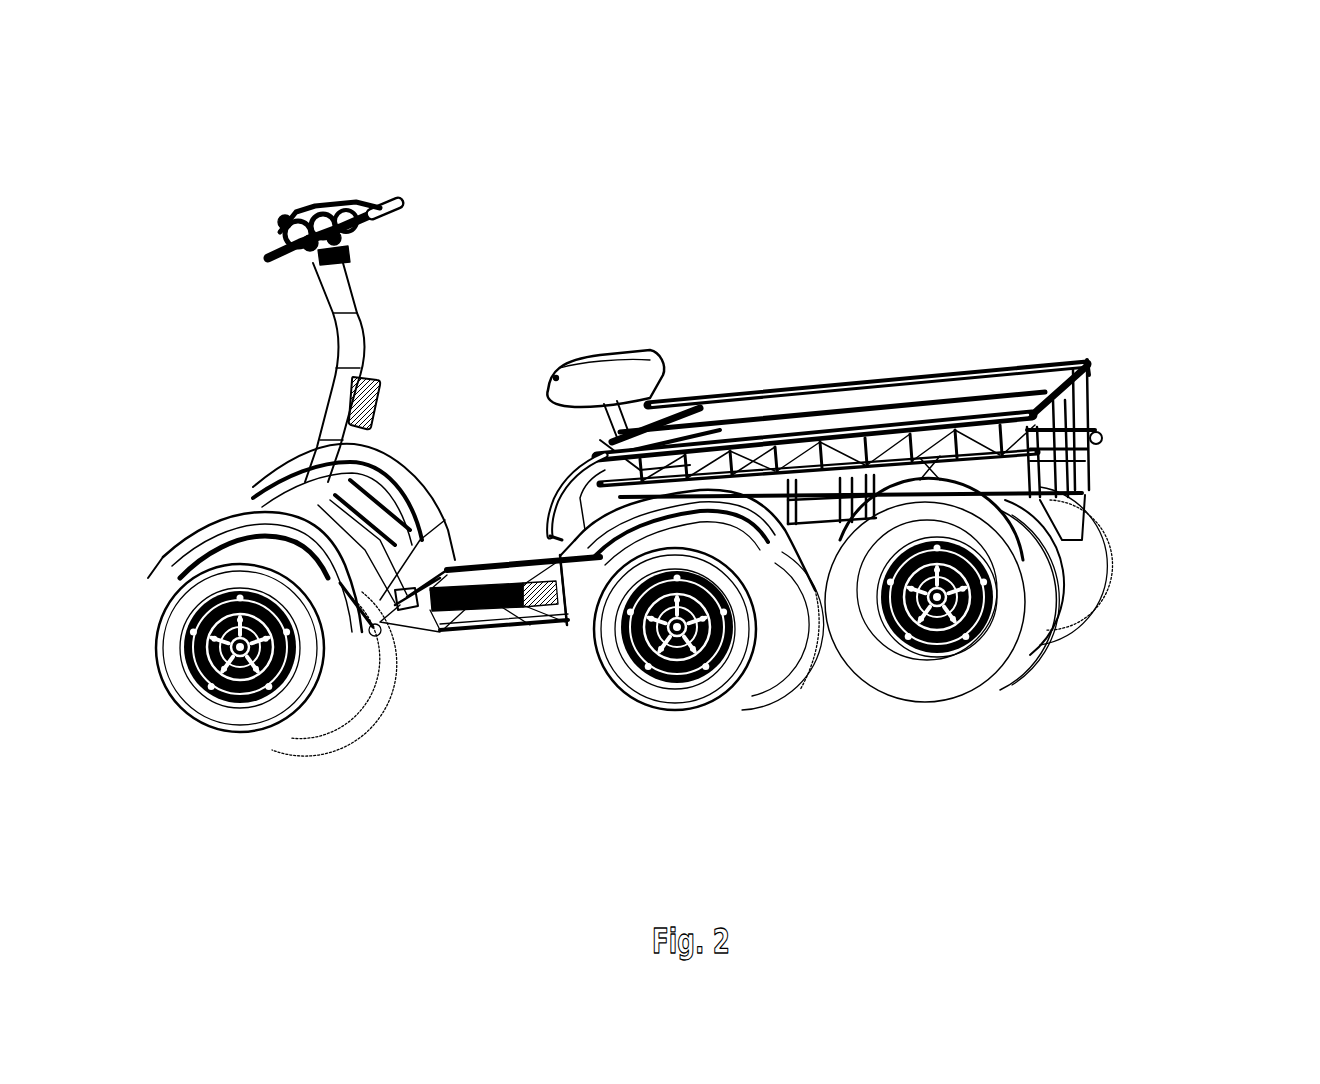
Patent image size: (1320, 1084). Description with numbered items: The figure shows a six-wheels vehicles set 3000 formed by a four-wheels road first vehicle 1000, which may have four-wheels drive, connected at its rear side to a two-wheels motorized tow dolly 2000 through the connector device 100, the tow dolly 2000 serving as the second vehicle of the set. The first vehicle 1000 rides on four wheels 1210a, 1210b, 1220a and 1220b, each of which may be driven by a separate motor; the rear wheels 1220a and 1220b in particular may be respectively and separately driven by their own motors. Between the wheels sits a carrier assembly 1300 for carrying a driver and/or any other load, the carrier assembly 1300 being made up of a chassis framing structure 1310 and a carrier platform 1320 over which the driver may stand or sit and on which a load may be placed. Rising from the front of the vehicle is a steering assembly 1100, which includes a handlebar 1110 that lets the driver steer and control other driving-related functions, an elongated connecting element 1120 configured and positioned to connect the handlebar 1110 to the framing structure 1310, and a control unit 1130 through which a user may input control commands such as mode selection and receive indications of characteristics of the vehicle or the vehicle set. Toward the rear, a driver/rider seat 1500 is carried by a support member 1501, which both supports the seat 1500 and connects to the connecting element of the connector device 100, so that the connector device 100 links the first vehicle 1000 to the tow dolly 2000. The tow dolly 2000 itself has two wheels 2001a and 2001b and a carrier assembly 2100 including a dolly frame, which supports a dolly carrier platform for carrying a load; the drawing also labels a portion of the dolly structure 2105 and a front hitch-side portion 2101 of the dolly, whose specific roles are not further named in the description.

The vehicles set 3000 is at (915, 107).
The first vehicle 1000 is at (293, 193).
The steering assembly 1100 is at (388, 327).
The handlebar 1110 is at (380, 237).
The elongated connecting element 1120 is at (317, 407).
The control unit 1130 is at (377, 401).
The wheel 1210a is at (380, 670).
The wheel 1210b is at (295, 720).
The rear wheel 1220a is at (817, 657).
The rear wheel 1220b is at (665, 703).
The carrier assembly 1300 is at (455, 632).
The chassis framing structure 1310 is at (490, 623).
The carrier platform 1320 is at (480, 577).
The driver/rider seat 1500 is at (613, 370).
The support member 1501 is at (648, 410).
The tow dolly 2000 is at (913, 353).
The carrier assembly 2100 is at (1083, 416).
The top rail 2105 is at (1043, 373).
The hitch coupling 2101 is at (572, 470).
The wheel 2001a is at (1100, 577).
The wheel 2001b is at (1017, 667).
The connector device 100 is at (823, 492).